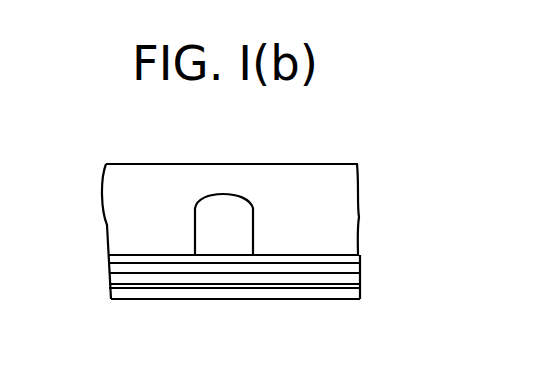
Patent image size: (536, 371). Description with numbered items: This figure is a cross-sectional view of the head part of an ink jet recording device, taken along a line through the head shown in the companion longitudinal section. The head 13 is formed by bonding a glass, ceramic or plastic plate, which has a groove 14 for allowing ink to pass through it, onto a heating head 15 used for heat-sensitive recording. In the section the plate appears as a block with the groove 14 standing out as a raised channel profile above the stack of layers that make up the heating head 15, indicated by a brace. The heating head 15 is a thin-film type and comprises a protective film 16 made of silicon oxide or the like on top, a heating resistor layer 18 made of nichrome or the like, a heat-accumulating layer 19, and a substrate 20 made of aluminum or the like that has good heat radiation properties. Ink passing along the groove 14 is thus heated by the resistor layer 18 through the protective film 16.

The head 13 is at (122, 163).
The groove 14 is at (237, 196).
The heating head 15 is at (269, 272).
The protective film 16 is at (278, 255).
The heating resistor layer 18 is at (309, 263).
The heat-accumulating layer 19 is at (323, 273).
The substrate 20 is at (309, 292).